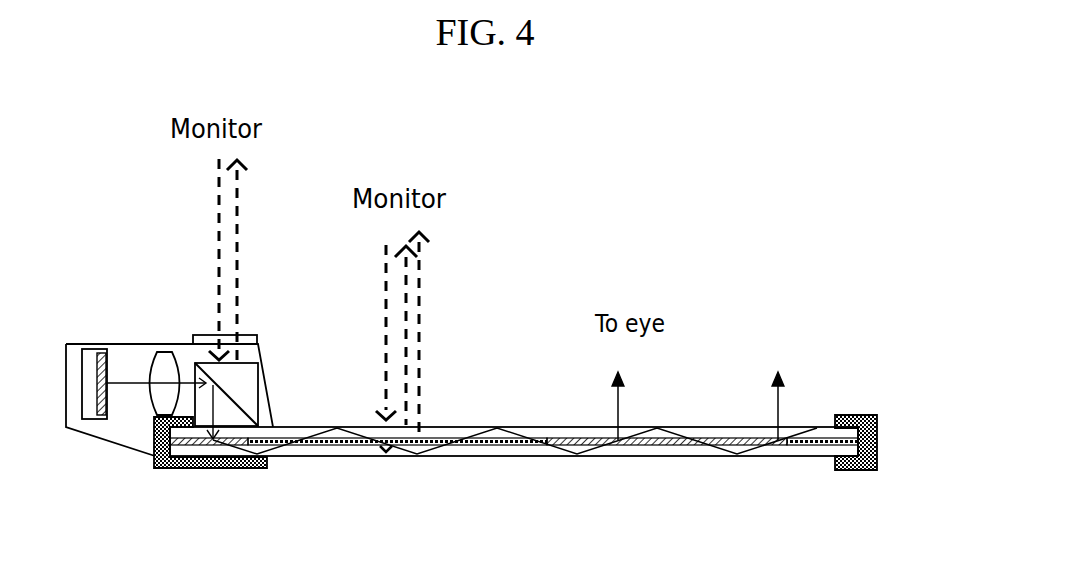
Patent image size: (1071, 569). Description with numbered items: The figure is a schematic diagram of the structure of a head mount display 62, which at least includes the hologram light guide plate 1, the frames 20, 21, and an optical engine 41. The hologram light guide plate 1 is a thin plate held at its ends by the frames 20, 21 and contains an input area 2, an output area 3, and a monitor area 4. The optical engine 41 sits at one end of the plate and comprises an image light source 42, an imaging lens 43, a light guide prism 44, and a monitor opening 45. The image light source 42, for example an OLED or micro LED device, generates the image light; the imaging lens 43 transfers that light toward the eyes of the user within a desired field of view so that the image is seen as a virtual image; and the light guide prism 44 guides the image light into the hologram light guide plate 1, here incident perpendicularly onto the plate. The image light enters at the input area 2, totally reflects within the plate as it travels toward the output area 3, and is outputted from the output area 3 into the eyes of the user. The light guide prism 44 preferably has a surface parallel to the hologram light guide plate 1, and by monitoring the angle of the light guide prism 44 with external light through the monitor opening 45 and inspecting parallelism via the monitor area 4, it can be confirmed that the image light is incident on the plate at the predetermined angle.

The hologram light guide plate 1 is at (790, 456).
The input area 2 is at (200, 457).
The output area 3 is at (669, 444).
The monitor area 4 is at (471, 444).
The frame 20 is at (860, 414).
The frame 21 is at (169, 470).
The optical engine 41 is at (75, 430).
The image light source 42 is at (97, 358).
The imaging lens 43 is at (168, 363).
The light guide prism 44 is at (256, 388).
The monitor opening 45 is at (250, 334).
The head mount display 62 is at (777, 190).